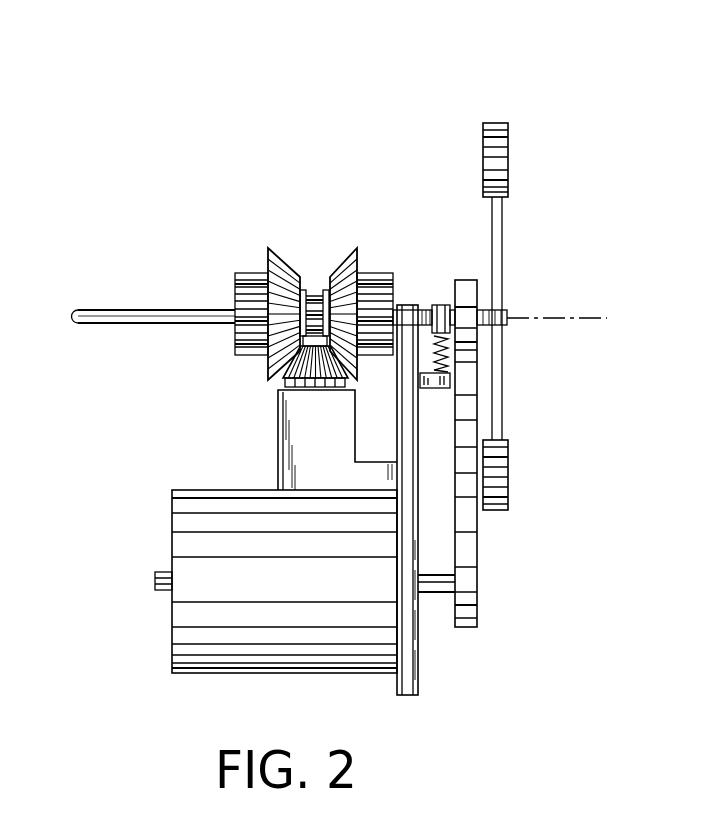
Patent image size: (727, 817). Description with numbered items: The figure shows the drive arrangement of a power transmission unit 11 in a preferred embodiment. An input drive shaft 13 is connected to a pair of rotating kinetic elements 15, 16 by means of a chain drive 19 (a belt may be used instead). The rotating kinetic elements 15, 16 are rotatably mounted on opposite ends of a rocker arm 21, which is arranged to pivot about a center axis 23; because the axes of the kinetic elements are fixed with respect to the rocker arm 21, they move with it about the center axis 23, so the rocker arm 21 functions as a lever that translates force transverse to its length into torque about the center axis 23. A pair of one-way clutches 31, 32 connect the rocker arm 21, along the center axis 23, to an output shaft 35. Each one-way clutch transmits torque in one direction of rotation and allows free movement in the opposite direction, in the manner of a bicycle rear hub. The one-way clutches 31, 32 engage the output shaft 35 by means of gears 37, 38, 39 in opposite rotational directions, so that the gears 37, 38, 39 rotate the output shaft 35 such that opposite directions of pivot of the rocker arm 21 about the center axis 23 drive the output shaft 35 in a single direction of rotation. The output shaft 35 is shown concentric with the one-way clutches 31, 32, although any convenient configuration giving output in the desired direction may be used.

The power transmission unit 11 is at (372, 130).
The input drive shaft 13 is at (470, 605).
The rotating kinetic element 15 is at (510, 486).
The rotating kinetic element 16 is at (510, 149).
The chain drive 19 is at (477, 532).
The rocker arm 21 is at (437, 303).
The center axis 23 is at (563, 318).
The one-way clutch 31 is at (252, 273).
The one-way clutch 32 is at (360, 273).
The output shaft 35 is at (121, 309).
The gear 37 is at (290, 265).
The gear 38 is at (336, 290).
The gear 39 is at (286, 377).